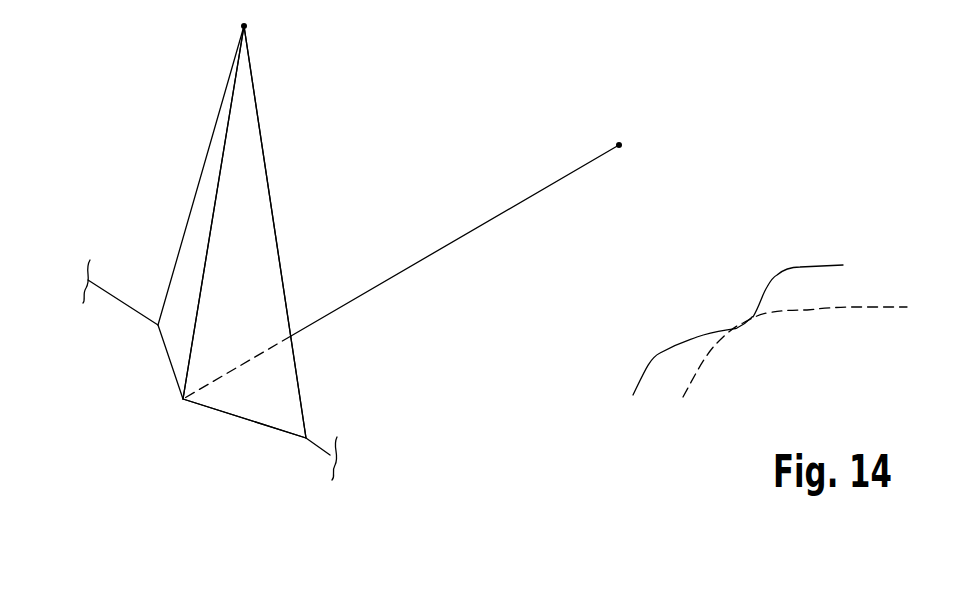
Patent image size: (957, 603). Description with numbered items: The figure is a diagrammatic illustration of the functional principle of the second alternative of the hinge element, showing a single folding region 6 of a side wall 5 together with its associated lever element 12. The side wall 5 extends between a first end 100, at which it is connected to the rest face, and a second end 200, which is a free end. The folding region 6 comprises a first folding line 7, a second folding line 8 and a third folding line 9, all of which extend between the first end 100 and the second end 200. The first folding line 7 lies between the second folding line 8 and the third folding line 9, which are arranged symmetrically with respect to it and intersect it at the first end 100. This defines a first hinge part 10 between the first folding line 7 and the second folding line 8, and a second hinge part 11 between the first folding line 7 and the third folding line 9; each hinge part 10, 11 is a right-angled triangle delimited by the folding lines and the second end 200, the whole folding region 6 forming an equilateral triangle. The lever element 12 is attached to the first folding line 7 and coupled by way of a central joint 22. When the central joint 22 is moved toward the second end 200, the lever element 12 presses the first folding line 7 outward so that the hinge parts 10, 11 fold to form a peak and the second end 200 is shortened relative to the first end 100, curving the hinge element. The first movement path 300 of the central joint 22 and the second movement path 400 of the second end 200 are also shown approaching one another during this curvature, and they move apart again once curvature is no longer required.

The side wall 5 is at (137, 288).
The folding region 6 is at (84, 144).
The first folding line 7 is at (208, 243).
The second folding line 8 is at (210, 142).
The third folding line 9 is at (260, 128).
The first hinge part 10 is at (212, 205).
The second hinge part 11 is at (252, 223).
The lever element 12 is at (540, 188).
The central joint 22 is at (606, 128).
The first end 100 is at (214, 22).
The second end 200 is at (210, 434).
The first movement path 300 is at (773, 273).
The second movement path 400 is at (758, 318).